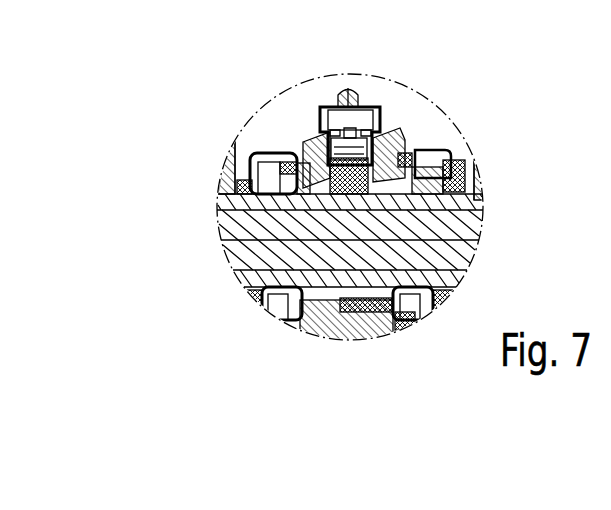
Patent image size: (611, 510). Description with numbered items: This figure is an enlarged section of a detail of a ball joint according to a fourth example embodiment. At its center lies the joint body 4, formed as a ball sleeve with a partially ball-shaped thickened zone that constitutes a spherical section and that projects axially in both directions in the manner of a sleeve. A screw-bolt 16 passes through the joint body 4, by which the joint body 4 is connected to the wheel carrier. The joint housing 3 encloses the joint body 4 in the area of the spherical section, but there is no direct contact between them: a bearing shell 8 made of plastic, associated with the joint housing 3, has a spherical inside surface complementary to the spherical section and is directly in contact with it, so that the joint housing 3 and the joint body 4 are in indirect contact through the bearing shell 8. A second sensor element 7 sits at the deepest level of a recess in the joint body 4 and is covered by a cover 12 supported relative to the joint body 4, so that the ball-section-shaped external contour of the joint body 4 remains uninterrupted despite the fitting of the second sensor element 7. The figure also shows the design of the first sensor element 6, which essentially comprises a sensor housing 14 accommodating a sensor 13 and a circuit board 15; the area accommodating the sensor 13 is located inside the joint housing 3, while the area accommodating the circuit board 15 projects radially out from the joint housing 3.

The joint housing 3 is at (300, 148).
The joint body 4 is at (436, 207).
The first sensor element 6 is at (323, 88).
The second sensor element 7 is at (400, 190).
The bearing shell 8 is at (380, 180).
The cover 12 is at (357, 170).
The sensor 13 is at (378, 128).
The sensor housing 14 is at (350, 158).
The circuit board 15 is at (350, 160).
The screw-bolt 16 is at (223, 253).